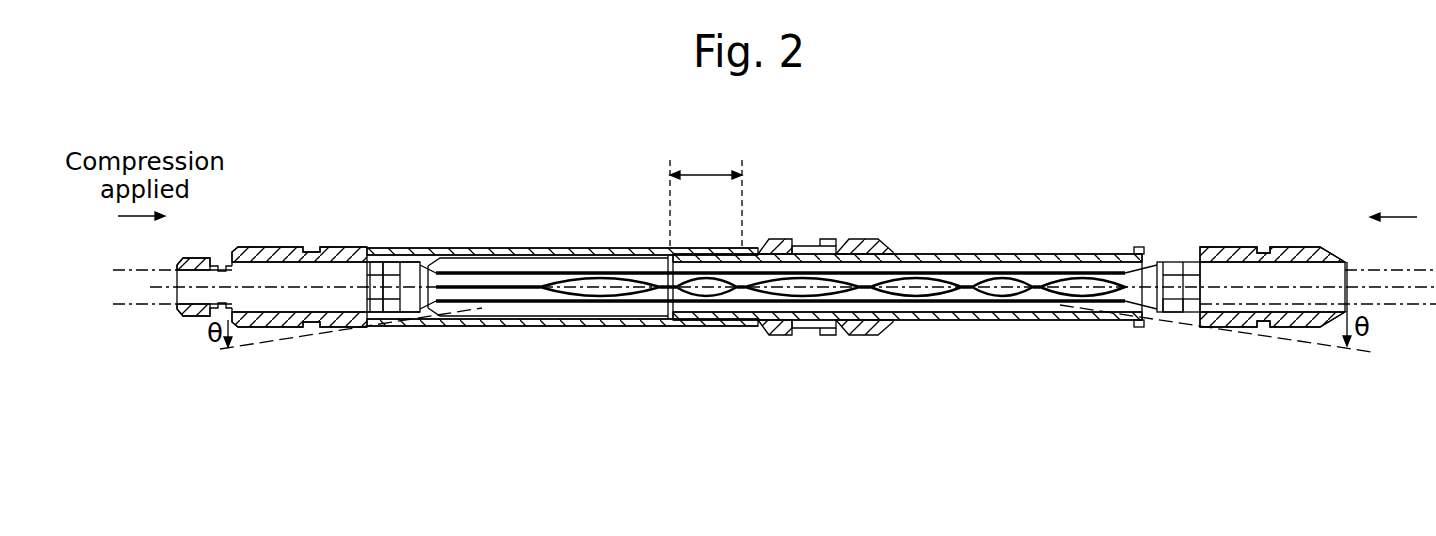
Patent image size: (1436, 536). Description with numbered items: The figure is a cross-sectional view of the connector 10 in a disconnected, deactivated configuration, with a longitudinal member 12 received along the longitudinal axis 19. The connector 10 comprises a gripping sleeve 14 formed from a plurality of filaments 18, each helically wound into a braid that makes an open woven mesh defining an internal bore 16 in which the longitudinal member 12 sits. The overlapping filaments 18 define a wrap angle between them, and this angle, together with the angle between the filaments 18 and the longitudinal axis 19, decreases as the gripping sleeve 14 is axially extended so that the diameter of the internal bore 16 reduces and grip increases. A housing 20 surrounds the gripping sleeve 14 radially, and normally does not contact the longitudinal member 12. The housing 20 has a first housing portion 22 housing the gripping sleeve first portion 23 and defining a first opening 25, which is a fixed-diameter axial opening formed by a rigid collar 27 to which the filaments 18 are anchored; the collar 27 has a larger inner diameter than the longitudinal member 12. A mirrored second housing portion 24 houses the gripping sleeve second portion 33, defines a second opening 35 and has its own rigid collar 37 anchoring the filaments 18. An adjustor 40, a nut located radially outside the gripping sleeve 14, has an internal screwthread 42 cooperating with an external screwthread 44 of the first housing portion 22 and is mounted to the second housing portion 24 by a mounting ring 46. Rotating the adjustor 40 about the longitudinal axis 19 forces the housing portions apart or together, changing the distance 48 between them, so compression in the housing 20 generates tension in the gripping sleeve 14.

The connector 10 is at (316, 152).
The longitudinal member 12 is at (1393, 270).
The gripping sleeve 14 is at (703, 289).
The internal bore 16 is at (1147, 262).
The filaments 18 is at (877, 272).
The longitudinal axis 19 is at (183, 285).
The housing 20 is at (833, 388).
The first housing portion 22 is at (1062, 253).
The gripping sleeve first portion 23 is at (1192, 246).
The second housing portion 24 is at (530, 328).
The first opening 25 is at (1232, 329).
The rigid collar 27 is at (1176, 306).
The gripping sleeve second portion 33 is at (405, 247).
The second opening 35 is at (367, 292).
The rigid collar 37 is at (377, 307).
The adjustor 40 is at (852, 245).
The internal screwthread 42 is at (762, 328).
The external screwthread 44 is at (800, 246).
The mounting ring 46 is at (763, 333).
The distance 48 is at (692, 173).